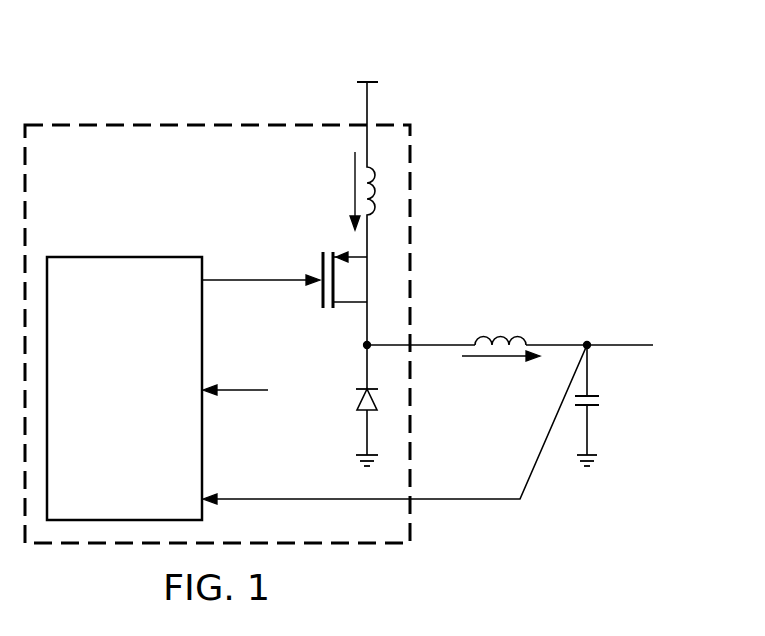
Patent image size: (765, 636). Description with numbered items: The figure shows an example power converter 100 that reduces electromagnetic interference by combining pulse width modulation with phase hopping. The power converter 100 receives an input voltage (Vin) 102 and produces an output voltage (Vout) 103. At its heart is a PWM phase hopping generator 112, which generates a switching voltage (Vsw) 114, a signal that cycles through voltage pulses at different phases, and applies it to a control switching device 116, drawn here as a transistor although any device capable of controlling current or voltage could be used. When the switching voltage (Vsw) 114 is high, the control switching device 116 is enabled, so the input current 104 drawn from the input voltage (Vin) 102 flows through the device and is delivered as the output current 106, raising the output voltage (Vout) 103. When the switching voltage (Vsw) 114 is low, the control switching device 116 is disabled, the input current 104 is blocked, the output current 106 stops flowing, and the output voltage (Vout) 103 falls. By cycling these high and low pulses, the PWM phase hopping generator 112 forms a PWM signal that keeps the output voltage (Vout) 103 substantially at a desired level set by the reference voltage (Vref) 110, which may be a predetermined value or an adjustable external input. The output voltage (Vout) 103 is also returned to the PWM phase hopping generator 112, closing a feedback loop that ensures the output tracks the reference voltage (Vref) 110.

The power converter 100 is at (592, 68).
The input voltage (Vin) 102 is at (365, 100).
The output voltage (Vout) 103 is at (620, 348).
The input current 104 is at (358, 166).
The output current 106 is at (472, 358).
The reference voltage (Vref) 110 is at (232, 393).
The PWM phase hopping generator 112 is at (144, 447).
The switching voltage (Vsw) 114 is at (232, 276).
The control switching device 116 is at (322, 291).